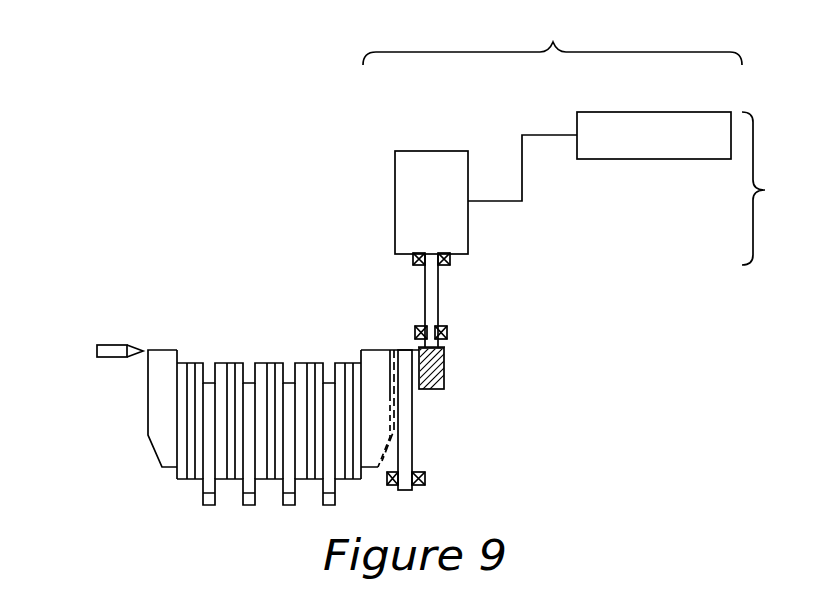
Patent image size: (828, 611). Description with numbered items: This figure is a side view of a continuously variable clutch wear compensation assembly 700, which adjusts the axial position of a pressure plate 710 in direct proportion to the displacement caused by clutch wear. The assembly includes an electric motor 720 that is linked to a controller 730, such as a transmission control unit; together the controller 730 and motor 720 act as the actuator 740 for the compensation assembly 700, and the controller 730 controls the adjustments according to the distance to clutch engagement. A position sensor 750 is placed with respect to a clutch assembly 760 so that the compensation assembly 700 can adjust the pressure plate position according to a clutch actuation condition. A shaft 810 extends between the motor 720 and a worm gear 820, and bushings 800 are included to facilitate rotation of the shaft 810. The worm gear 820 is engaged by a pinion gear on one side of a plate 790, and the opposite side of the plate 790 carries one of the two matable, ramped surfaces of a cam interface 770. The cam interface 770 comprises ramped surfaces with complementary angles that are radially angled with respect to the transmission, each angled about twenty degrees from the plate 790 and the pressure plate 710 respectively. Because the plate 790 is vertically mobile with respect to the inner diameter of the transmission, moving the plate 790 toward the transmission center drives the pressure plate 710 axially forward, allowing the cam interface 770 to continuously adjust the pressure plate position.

The clutch wear compensation assembly 700 is at (552, 39).
The pressure plate 710 is at (362, 353).
The electric motor 720 is at (395, 181).
The controller 730 is at (650, 112).
The actuator 740 is at (778, 188).
The position sensor 750 is at (110, 350).
The clutch assembly 760 is at (219, 324).
The cam interface 770 is at (391, 340).
The plate 790 is at (413, 437).
The bushings 800 is at (446, 266).
The shaft 810 is at (426, 293).
The worm gear 820 is at (444, 368).